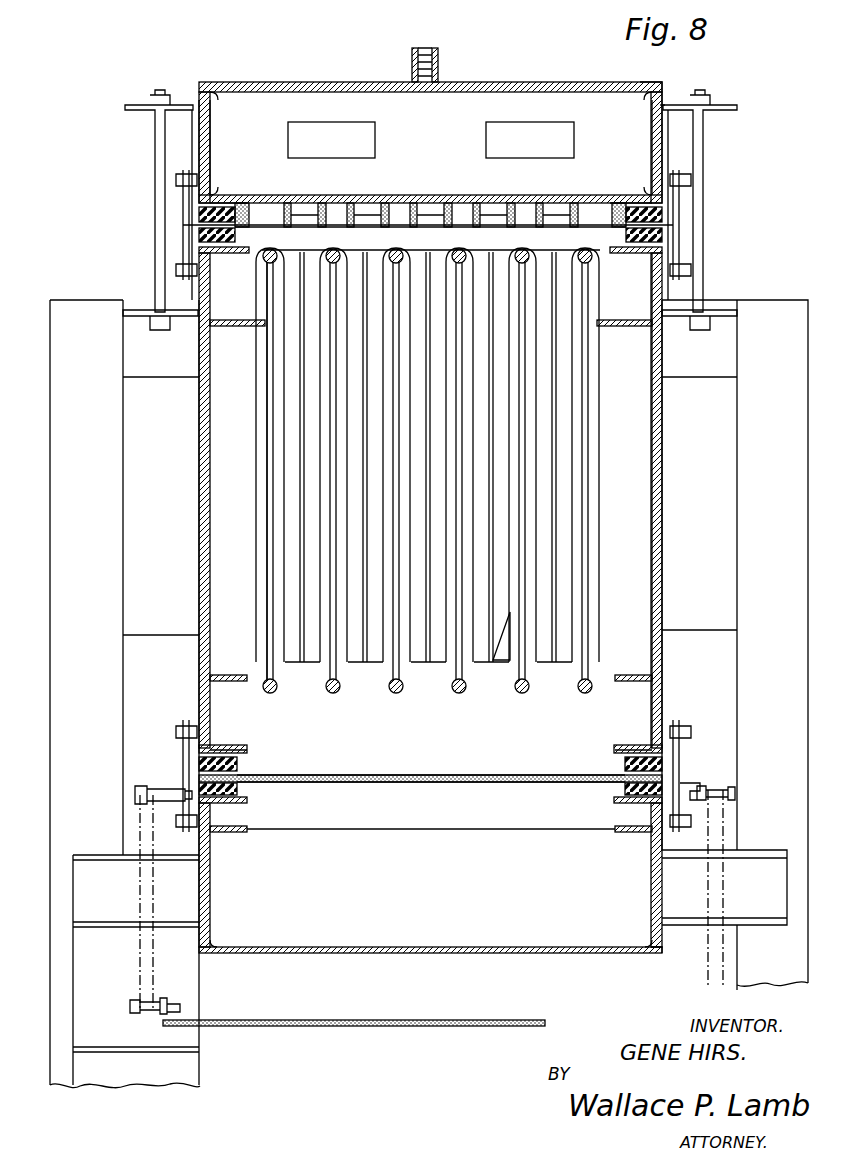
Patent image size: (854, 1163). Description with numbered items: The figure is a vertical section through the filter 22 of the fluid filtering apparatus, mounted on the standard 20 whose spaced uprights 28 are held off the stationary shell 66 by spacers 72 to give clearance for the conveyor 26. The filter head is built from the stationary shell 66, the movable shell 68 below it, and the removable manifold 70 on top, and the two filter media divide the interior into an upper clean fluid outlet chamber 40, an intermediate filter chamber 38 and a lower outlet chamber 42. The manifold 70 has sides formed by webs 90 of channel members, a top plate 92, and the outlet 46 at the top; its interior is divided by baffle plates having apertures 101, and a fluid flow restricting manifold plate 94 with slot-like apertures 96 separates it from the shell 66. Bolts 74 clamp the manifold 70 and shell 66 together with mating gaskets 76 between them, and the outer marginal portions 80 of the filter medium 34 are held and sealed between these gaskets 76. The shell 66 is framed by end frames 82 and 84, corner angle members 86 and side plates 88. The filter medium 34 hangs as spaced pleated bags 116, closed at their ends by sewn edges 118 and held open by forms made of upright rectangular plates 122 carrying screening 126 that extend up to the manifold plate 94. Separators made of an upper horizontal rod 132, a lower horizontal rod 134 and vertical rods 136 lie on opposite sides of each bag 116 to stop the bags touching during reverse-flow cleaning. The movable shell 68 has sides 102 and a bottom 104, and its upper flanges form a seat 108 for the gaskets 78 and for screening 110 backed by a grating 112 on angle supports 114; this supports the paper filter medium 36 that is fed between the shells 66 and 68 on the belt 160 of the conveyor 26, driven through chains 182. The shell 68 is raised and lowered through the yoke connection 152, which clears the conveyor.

The support or standard 20 is at (52, 300).
The filter 22 is at (755, 133).
The filter medium replacement and foreign matter disposal machine or conveyor 26 is at (125, 795).
The uprights 28 is at (124, 527).
The filter medium 34 is at (589, 300).
The second filter medium 36 is at (530, 775).
The intermediate filter chamber 38 is at (449, 732).
The upper clean fluid outlet chamber 40 is at (442, 137).
The lower outlet chamber 42 is at (340, 953).
The outlet 46 is at (440, 50).
The stationary shell 66 is at (664, 480).
The movable shell 68 is at (662, 953).
The manifold 70 is at (665, 85).
The spacers 72 is at (170, 377).
The bolts 74 is at (155, 163).
The gaskets 76 is at (226, 195).
The gaskets 78 is at (225, 745).
The outer marginal portions 80 is at (199, 224).
The end frame 82 is at (225, 327).
The end frame 84 is at (225, 675).
The angle members 86 is at (215, 478).
The plates 88 is at (199, 437).
The webs 90 is at (211, 142).
The plate 92 is at (305, 82).
The fluid flow restricting manifold plate 94 is at (596, 195).
The slot-like apertures 96 is at (318, 203).
The apertures 101 is at (352, 130).
The sides 102 is at (212, 900).
The bottom 104 is at (455, 953).
The seat 108 is at (247, 800).
The screening 110 is at (433, 783).
The grating 112 is at (385, 829).
The angle supports 114 is at (215, 833).
The bags 116 is at (290, 662).
The sewn side edges 118 is at (296, 500).
The rectangular plates 122 is at (400, 215).
The screening 126 is at (286, 213).
The upper horizontal rod 132 is at (277, 252).
The lower horizontal rod 134 is at (266, 693).
The vertical rods 136 is at (588, 398).
The yoke connection 152 is at (760, 850).
The belt 160 is at (383, 775).
The endless driving chains 182 is at (718, 785).